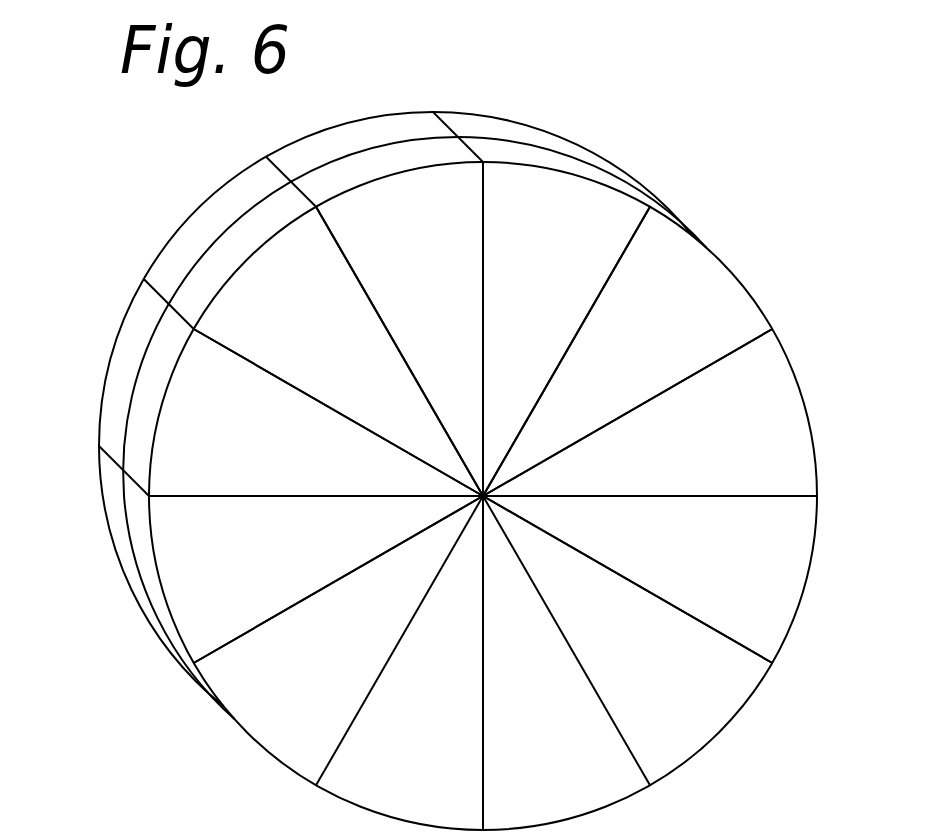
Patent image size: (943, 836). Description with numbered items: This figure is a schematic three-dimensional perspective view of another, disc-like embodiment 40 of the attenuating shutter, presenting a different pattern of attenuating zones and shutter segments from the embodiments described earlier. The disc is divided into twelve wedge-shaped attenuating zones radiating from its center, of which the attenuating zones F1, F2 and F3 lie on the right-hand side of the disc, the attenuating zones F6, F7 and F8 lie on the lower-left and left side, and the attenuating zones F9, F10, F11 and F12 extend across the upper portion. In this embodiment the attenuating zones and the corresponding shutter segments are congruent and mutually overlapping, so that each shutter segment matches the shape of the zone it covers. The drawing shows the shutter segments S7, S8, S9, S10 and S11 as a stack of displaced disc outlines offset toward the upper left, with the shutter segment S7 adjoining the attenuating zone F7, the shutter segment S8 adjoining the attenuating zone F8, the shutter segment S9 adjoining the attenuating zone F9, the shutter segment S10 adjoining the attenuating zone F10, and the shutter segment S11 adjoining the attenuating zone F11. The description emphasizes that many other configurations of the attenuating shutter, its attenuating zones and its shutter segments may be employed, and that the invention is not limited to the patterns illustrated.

The disc-like embodiment of the attenuating shutter 40 is at (657, 153).
The attenuating zone F1 is at (770, 458).
The attenuating zone F2 is at (767, 598).
The attenuating zone F3 is at (735, 692).
The attenuating zone F6 is at (288, 740).
The attenuating zone F7 is at (198, 647).
The attenuating zone F8 is at (202, 438).
The attenuating zone F9 is at (290, 312).
The attenuating zone F10 is at (382, 213).
The attenuating zone F11 is at (532, 210).
The attenuating zone F12 is at (693, 303).
The shutter segment S7 is at (122, 555).
The shutter segment S8 is at (137, 317).
The shutter segment S9 is at (240, 188).
The shutter segment S10 is at (332, 145).
The shutter segment S11 is at (495, 128).